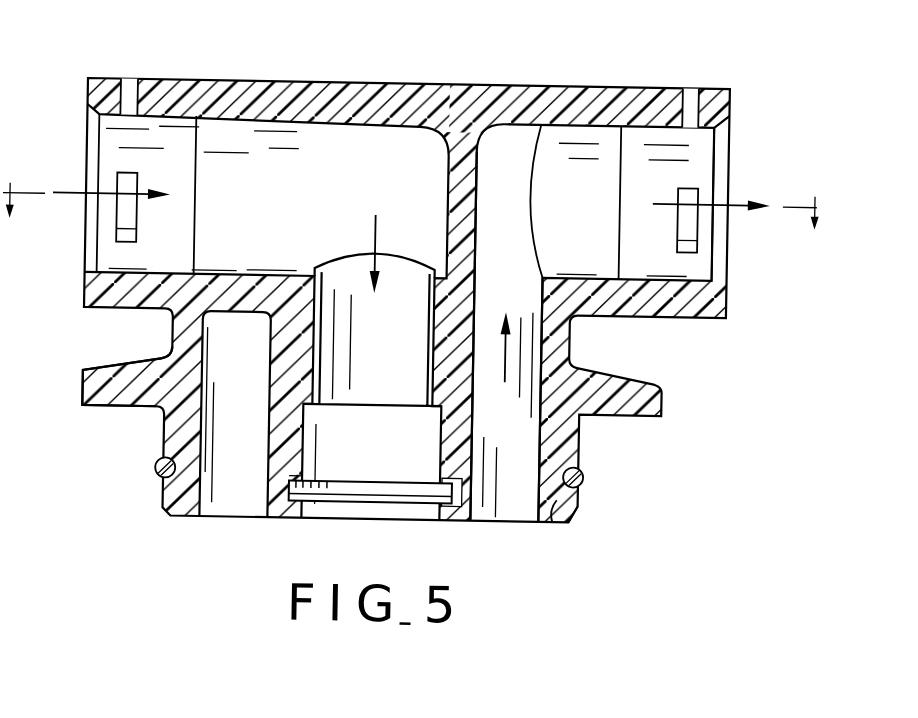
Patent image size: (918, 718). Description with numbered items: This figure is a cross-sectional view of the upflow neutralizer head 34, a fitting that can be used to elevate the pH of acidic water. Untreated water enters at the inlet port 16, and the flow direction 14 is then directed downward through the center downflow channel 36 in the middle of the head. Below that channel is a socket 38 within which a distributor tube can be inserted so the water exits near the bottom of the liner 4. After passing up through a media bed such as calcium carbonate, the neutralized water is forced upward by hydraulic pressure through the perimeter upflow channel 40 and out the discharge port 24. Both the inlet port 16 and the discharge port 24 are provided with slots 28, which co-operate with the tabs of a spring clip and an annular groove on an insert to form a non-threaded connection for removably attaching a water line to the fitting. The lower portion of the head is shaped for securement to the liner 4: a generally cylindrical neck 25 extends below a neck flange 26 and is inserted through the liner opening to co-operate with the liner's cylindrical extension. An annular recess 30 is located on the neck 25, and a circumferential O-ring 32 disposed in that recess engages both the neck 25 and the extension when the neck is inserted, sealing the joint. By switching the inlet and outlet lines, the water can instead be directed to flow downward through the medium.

The liner 4 is at (410, 224).
The flow direction 14 is at (79, 193).
The inlet port 16 is at (86, 137).
The discharge port 24 is at (731, 137).
The neck 25 is at (564, 492).
The neck flange 26 is at (120, 387).
The slots 28 is at (132, 86).
The annular recess 30 is at (184, 470).
The O-ring 32 is at (165, 471).
The upflow neutralizer head 34 is at (546, 69).
The center downflow channel 36 is at (377, 373).
The socket 38 is at (444, 446).
The perimeter upflow channel 40 is at (506, 420).